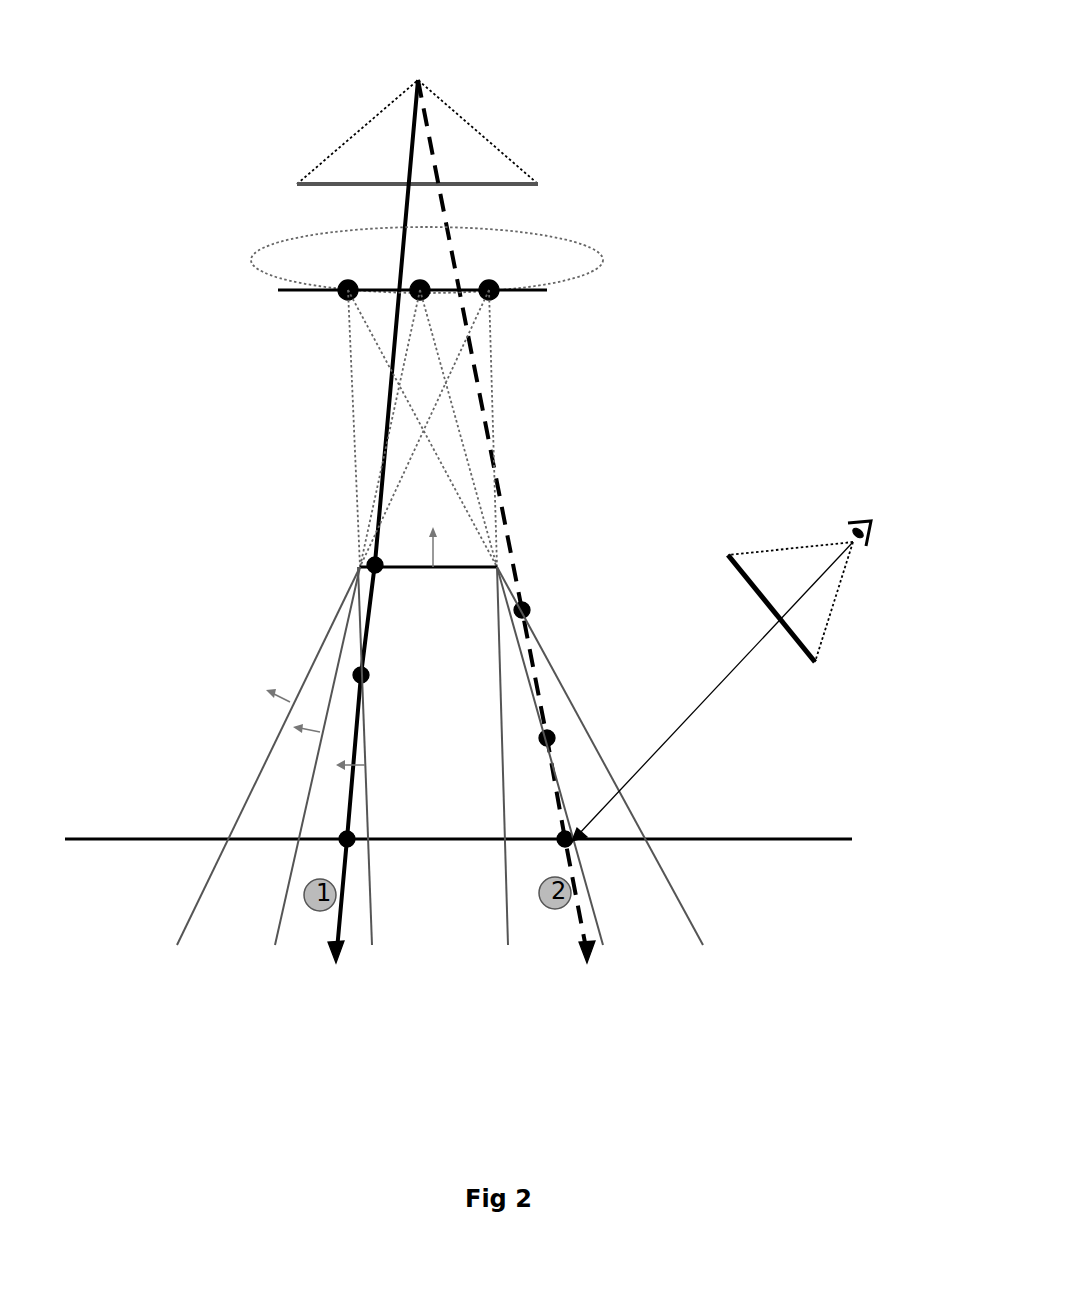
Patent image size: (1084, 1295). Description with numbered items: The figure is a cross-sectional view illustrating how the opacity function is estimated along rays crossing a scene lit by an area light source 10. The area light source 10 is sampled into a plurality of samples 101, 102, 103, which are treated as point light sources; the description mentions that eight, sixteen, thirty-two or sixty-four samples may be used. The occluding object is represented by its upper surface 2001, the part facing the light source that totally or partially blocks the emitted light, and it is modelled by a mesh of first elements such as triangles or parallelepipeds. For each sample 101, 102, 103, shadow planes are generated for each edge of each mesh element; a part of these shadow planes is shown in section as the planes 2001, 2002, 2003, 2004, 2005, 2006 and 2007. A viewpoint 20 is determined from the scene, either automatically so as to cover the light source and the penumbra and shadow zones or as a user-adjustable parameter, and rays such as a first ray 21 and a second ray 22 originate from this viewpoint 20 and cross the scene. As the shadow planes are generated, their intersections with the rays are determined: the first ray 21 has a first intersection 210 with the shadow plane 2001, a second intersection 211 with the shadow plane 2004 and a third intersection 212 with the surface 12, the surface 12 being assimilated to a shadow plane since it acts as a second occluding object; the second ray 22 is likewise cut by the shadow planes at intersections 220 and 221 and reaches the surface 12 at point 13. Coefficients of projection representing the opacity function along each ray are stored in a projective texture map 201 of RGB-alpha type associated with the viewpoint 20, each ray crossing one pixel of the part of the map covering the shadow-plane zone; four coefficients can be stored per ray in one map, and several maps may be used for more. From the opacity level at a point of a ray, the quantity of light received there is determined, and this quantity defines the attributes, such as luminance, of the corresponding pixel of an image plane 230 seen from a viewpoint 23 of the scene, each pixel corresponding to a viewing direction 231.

The viewpoint 20 is at (418, 78).
The projective texture map 201 is at (527, 183).
The first ray 21 is at (410, 165).
The ray 22 is at (436, 128).
The area light source 10 is at (292, 297).
The sample 101 is at (346, 283).
The sample 102 is at (416, 283).
The sample 103 is at (493, 283).
The upper surface 2001 is at (500, 564).
The first intersection 210 is at (368, 560).
The second intersection 211 is at (365, 680).
The third intersection 212 is at (353, 845).
The fourth intersection point 220 is at (530, 596).
The fifth intersection point 221 is at (552, 733).
The point p on plane 13 is at (575, 848).
The surface 12 is at (140, 845).
The shadow plane 2002 is at (245, 798).
The shadow plane 2003 is at (333, 680).
The shadow plane 2004 is at (375, 940).
The shadow plane 2005 is at (500, 730).
The shadow plane 2006 is at (605, 945).
The shadow plane 2007 is at (700, 842).
The viewpoint 23 is at (855, 520).
The image plane 230 is at (812, 665).
The viewing direction 231 is at (744, 658).